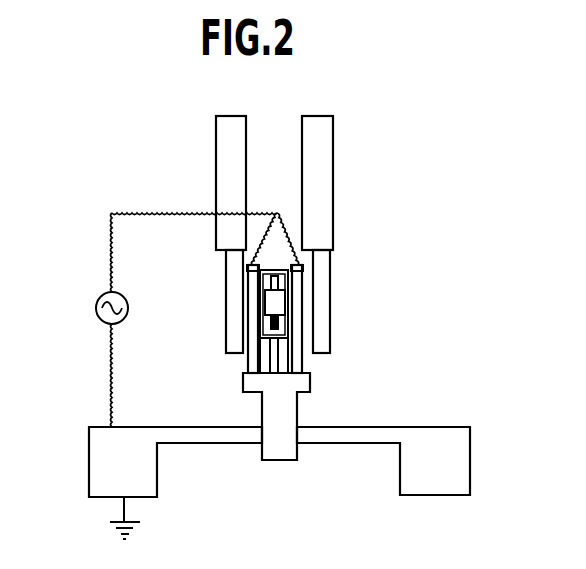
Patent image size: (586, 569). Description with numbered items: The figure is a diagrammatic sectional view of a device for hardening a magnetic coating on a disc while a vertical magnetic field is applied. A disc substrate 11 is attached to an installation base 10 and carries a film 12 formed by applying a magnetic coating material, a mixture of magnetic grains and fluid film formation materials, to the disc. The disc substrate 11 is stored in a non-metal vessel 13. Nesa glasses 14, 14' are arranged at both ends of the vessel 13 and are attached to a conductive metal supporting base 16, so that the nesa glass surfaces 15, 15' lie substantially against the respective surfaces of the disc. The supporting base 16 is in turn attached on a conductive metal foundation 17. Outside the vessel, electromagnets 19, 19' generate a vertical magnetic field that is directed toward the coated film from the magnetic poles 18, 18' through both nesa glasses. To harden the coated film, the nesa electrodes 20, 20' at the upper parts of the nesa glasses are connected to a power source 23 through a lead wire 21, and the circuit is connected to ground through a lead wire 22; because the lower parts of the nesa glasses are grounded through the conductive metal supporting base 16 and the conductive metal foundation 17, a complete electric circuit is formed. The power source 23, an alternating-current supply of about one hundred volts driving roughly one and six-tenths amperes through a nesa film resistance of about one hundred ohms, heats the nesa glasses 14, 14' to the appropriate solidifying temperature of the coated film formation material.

The installation base 10 is at (286, 300).
The disc substrate 11 is at (271, 290).
The film 12 is at (271, 326).
The non-metal vessel 13 is at (268, 272).
The nesa glass 14 is at (218, 370).
The nesa glass 14' is at (338, 372).
The nesa glass surface 15 is at (211, 322).
The nesa glass surface 15' is at (345, 321).
The conductive metal supporting base 16 is at (268, 412).
The conductive metal foundation 17 is at (413, 468).
The magnetic pole 18 is at (204, 301).
The magnetic pole 18' is at (355, 301).
The electromagnet 19 is at (203, 183).
The electromagnet 19' is at (346, 183).
The nesa electrode 20 is at (212, 264).
The nesa electrode 20' is at (344, 255).
The lead wire 21 is at (172, 212).
The lead wire 22 is at (112, 366).
The power source 23 is at (104, 296).